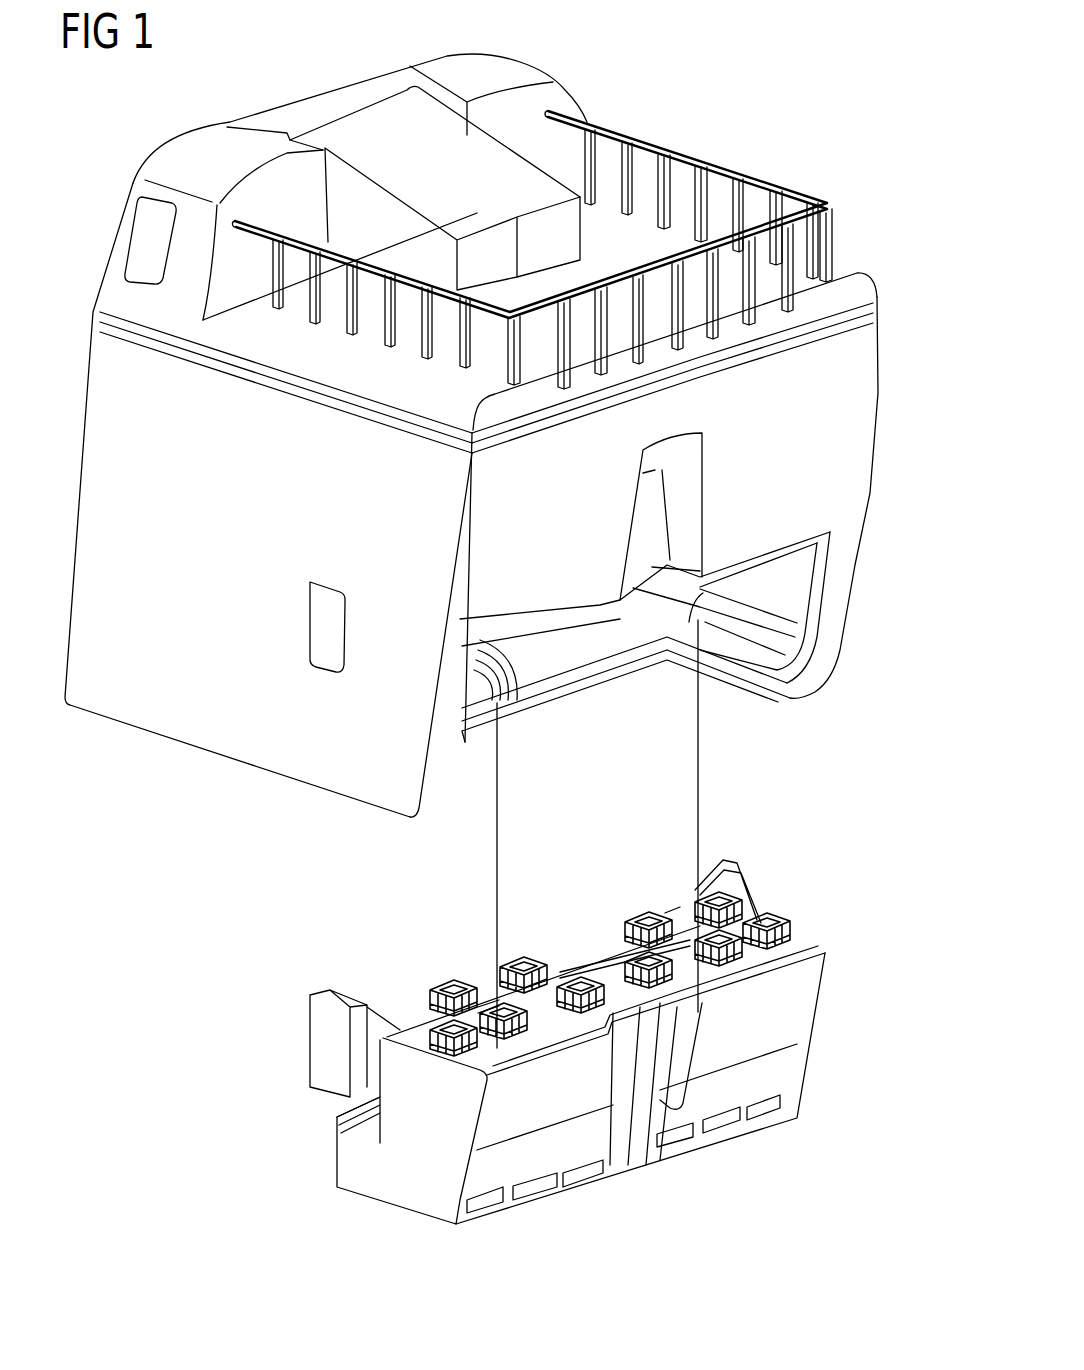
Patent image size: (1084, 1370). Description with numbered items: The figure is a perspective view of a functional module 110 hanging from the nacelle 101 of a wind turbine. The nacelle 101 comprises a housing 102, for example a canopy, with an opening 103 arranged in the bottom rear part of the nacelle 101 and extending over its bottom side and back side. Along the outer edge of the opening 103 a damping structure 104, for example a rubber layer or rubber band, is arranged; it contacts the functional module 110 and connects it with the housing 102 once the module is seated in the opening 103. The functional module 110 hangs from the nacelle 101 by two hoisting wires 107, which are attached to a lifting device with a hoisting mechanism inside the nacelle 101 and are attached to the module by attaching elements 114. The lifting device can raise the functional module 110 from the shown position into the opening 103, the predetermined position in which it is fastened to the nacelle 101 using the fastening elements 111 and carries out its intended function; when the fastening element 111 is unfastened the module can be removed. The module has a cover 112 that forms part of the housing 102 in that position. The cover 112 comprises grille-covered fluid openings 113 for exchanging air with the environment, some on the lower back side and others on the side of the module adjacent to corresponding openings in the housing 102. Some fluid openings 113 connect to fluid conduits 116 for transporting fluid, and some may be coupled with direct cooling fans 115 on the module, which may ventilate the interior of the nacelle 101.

The nacelle 101 is at (742, 118).
The housing 102 is at (857, 585).
The opening 103 is at (747, 732).
The damping structure 104 is at (798, 650).
The hoisting wires 107 is at (498, 760).
The functional module 110 is at (845, 1052).
The fastening element 111 is at (722, 963).
The cover 112 is at (810, 985).
The fluid openings 113 is at (330, 1080).
The fastening elements 114 is at (724, 965).
The cooling fans 115 is at (431, 1041).
The fluid conduits 116 is at (367, 1007).